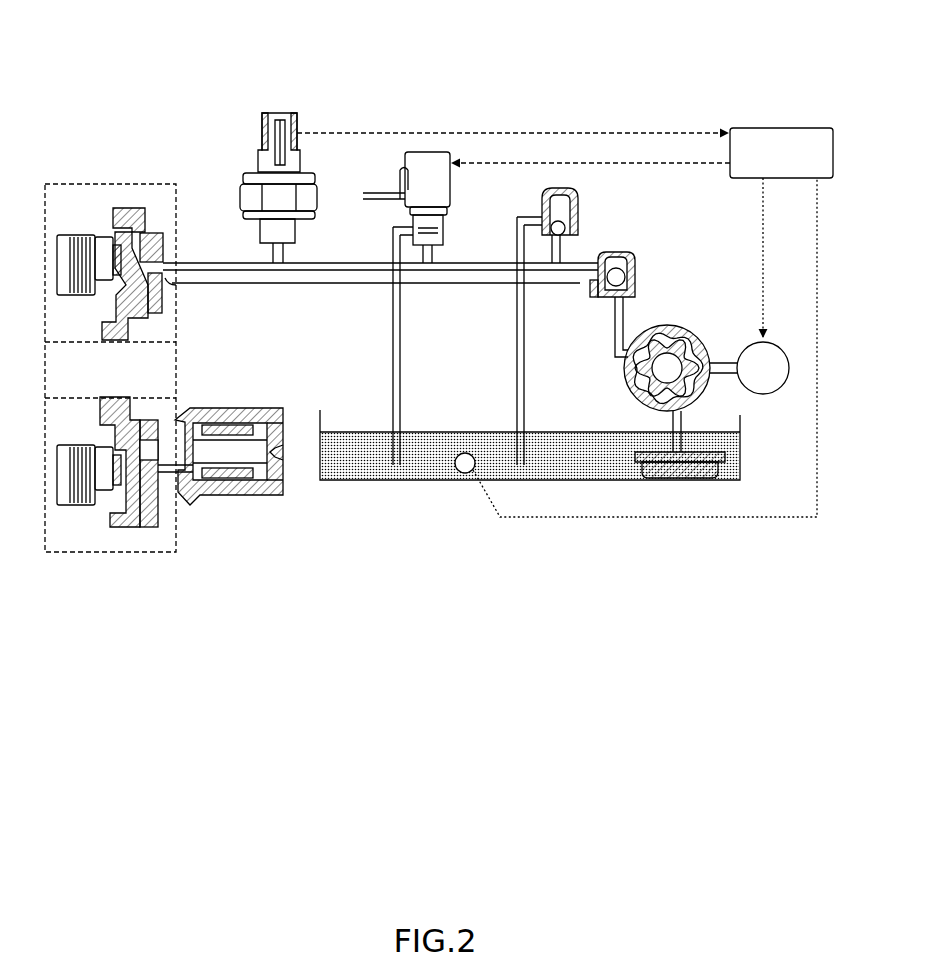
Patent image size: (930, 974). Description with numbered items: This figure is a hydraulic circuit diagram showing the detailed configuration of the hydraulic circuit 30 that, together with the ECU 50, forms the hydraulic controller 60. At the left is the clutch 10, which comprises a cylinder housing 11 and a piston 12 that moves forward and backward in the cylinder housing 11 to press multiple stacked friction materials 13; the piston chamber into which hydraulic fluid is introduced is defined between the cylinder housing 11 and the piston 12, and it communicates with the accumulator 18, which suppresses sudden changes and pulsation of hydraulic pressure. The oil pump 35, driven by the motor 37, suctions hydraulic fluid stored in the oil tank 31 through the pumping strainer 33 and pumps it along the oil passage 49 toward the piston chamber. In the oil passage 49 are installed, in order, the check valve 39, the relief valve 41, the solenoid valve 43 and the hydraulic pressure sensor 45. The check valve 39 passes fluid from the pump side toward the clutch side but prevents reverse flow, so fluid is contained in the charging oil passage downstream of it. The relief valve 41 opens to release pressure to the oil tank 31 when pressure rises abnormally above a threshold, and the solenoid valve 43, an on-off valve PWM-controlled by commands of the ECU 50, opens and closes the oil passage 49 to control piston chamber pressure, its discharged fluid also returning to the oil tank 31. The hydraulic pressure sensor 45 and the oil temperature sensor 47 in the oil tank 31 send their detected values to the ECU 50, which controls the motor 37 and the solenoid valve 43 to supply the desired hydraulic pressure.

The clutch 10 is at (62, 183).
The cylinder housing 11 is at (132, 210).
The piston 12 is at (113, 232).
The friction materials 13 is at (83, 296).
The accumulator 18 is at (243, 409).
The hydraulic circuit 30 is at (520, 110).
The oil tank 31 is at (742, 463).
The pumping strainer 33 is at (707, 447).
The oil pump 35 is at (677, 326).
The motor 37 is at (778, 344).
The check valve 39 is at (637, 255).
The relief valve 41 is at (583, 205).
The solenoid valve 43 is at (427, 152).
The hydraulic pressure sensor 45 is at (285, 113).
The oil temperature sensor 47 is at (446, 472).
The oil passage 49 is at (368, 283).
The ECU 50 is at (787, 128).
The hydraulic controller 60 is at (660, 77).